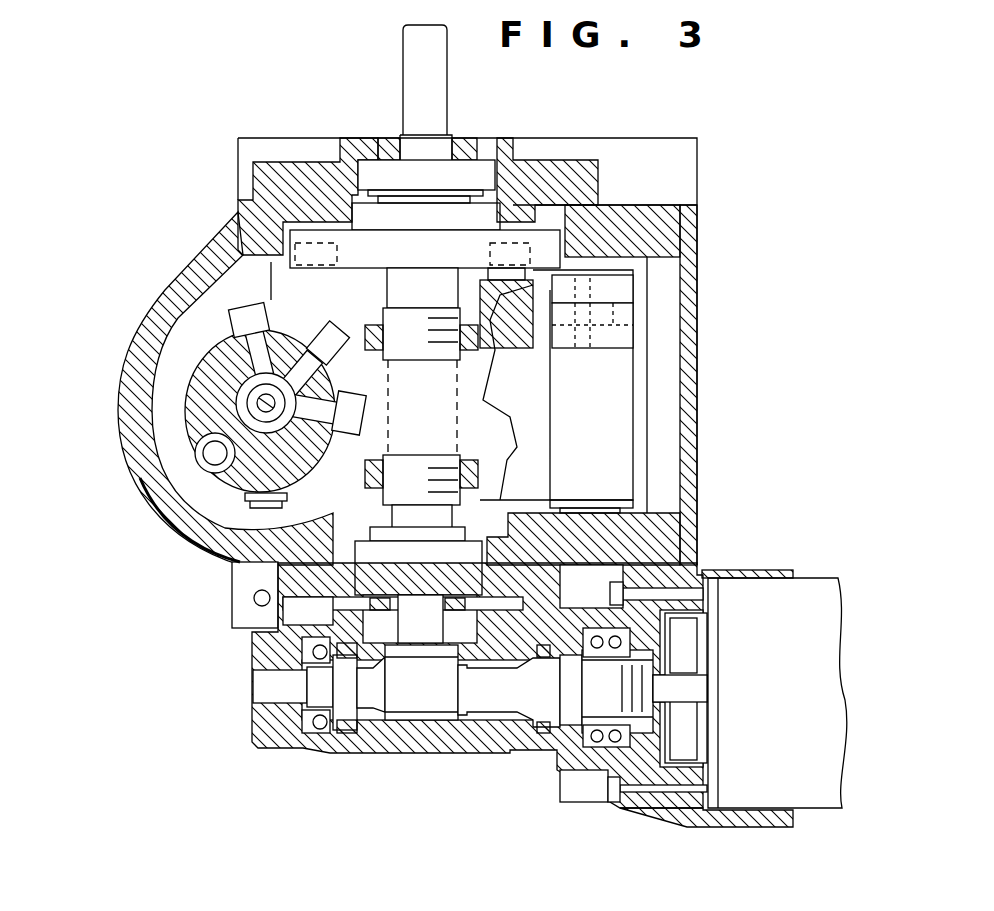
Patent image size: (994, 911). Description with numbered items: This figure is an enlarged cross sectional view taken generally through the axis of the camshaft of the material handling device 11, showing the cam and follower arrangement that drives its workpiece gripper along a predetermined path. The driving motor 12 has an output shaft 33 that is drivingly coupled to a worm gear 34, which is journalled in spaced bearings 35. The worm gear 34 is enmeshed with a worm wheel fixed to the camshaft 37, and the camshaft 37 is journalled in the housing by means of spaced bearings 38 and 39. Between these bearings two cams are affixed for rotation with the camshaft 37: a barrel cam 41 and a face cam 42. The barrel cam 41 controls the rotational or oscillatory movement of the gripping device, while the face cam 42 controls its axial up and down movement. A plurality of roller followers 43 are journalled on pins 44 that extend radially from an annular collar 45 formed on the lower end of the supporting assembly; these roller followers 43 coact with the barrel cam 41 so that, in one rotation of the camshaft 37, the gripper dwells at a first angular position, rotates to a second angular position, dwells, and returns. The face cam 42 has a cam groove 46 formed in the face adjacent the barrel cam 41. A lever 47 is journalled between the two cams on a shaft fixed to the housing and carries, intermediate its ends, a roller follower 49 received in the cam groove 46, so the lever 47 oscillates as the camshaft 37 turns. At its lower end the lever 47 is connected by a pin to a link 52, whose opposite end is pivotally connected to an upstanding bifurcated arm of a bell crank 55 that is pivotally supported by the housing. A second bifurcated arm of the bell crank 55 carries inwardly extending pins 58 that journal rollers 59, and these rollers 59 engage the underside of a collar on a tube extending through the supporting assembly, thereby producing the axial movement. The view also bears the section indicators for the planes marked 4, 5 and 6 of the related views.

The section line 4- 4 is at (274, 256).
The view direction 5 is at (825, 448).
The section line 6- 6 is at (50, 430).
The material handling device 11 is at (196, 717).
The driving motor 12 is at (823, 573).
The output shaft 33 is at (688, 700).
The worm gear 34 is at (417, 712).
The spaced bearings 35 is at (303, 728).
The camshaft 37 is at (428, 440).
The bearing 38 is at (238, 558).
The bearing 39 is at (365, 165).
The barrel cam 41 is at (522, 438).
The face cam 42 is at (548, 232).
The roller followers 43 is at (232, 312).
The pins 44 is at (236, 395).
The annular collar 45 is at (298, 343).
The cam groove 46 is at (426, 195).
The lever 47 is at (518, 338).
The roller follower 49 is at (465, 252).
The link 52 is at (612, 320).
The bell crank 55 is at (632, 292).
The pad 58 is at (280, 470).
The rollers 59 is at (150, 478).